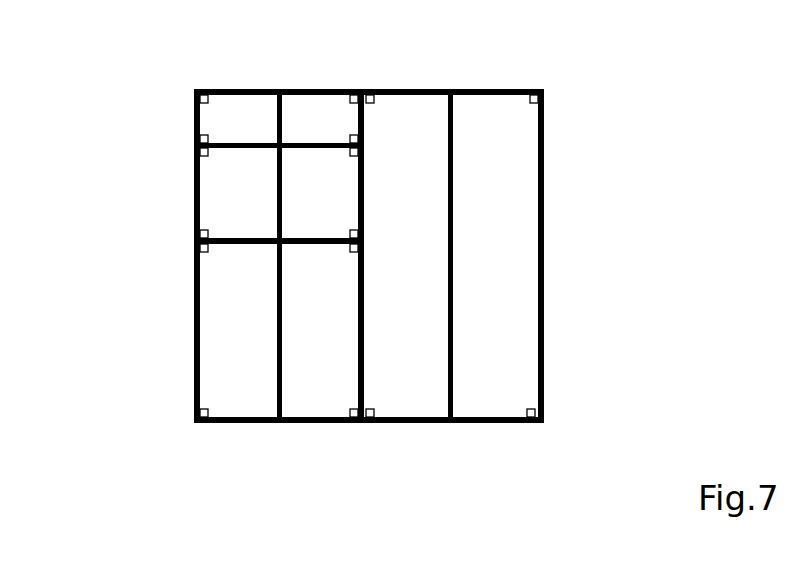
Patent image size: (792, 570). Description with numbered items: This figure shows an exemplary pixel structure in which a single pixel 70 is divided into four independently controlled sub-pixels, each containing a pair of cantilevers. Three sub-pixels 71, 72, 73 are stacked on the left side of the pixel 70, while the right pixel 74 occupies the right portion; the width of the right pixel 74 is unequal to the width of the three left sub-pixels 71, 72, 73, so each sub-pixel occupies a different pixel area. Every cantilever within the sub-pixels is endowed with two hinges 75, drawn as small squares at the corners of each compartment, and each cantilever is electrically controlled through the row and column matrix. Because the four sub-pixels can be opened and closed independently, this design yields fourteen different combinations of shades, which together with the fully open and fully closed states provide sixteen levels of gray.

The pixel 70 is at (280, 93).
The sub-pixel 71 is at (183, 107).
The sub-pixel 72 is at (177, 186).
The sub-pixel 73 is at (173, 312).
The right pixel 74 is at (558, 269).
The hinges 75 is at (542, 93).